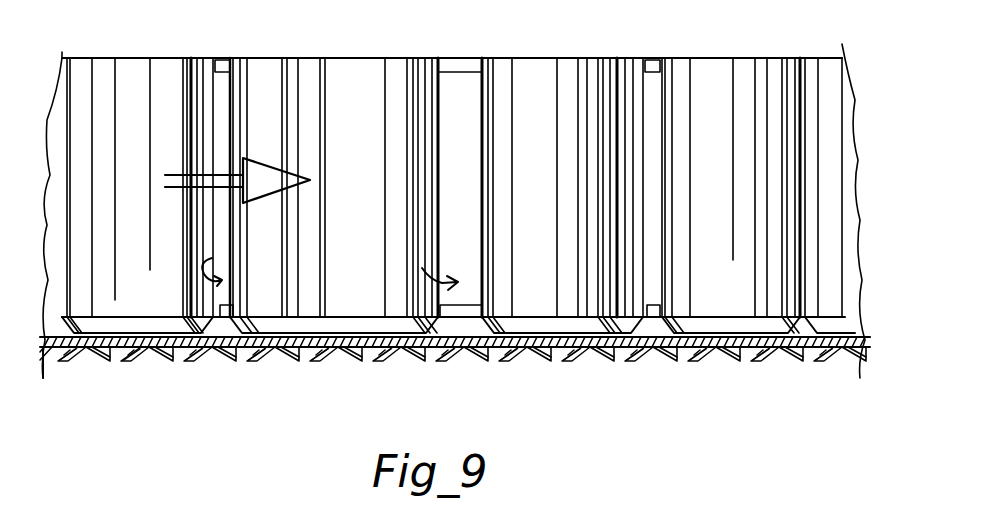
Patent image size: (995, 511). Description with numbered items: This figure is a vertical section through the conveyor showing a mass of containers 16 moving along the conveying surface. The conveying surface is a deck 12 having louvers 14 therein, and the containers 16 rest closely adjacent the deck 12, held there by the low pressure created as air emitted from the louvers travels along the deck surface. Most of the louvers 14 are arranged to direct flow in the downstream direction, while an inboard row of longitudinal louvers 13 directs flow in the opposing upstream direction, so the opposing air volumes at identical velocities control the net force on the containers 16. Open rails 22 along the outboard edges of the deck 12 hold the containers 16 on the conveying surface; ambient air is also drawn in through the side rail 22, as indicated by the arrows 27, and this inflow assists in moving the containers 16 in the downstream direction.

The deck 12 is at (93, 350).
The longitudinal louvers 13 is at (352, 357).
The louvers 14 is at (112, 355).
The containers 16 is at (137, 65).
The open rails 22 is at (222, 62).
The arrows 27 is at (212, 258).